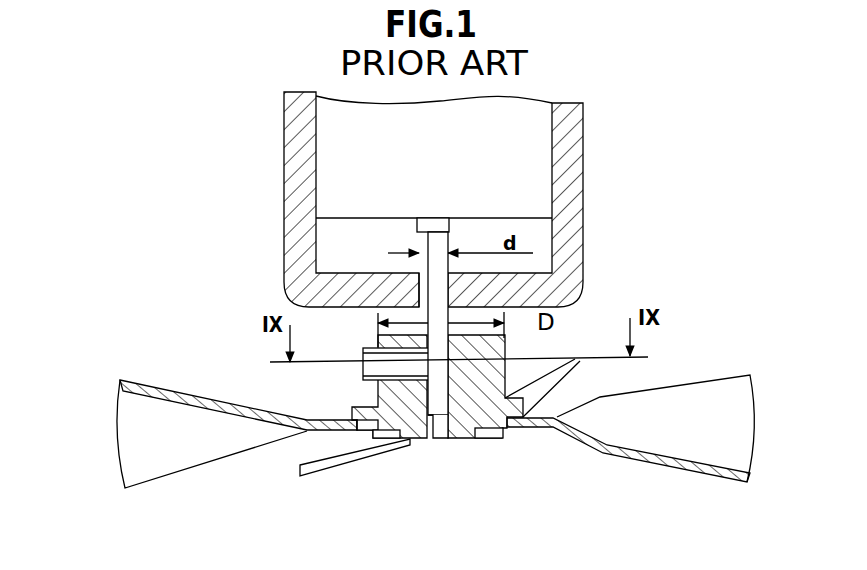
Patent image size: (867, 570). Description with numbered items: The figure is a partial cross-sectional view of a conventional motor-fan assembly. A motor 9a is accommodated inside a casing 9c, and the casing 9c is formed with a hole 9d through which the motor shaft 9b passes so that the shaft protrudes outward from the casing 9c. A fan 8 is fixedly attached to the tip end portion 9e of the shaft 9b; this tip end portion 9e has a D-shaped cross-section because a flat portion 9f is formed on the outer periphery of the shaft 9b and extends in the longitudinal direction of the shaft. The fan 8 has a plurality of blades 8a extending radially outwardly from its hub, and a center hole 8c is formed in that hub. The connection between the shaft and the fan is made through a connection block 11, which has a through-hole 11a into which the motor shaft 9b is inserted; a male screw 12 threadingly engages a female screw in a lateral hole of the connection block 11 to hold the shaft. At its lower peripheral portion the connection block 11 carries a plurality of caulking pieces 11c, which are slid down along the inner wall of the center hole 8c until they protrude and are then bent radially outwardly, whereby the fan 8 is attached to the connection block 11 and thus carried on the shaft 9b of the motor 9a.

The fan 8 is at (537, 425).
The blades 8a is at (130, 437).
The center hole 8c is at (489, 433).
The motor 9a is at (333, 128).
The motor shaft 9b is at (438, 240).
The casing 9c is at (583, 141).
The hole 9d is at (424, 278).
The tip end portion 9e is at (437, 420).
The flat portion 9f is at (418, 398).
The connection block 11 is at (357, 407).
The through-hole 11a is at (447, 435).
The caulking pieces 11c is at (368, 432).
The male screw 12 is at (363, 349).